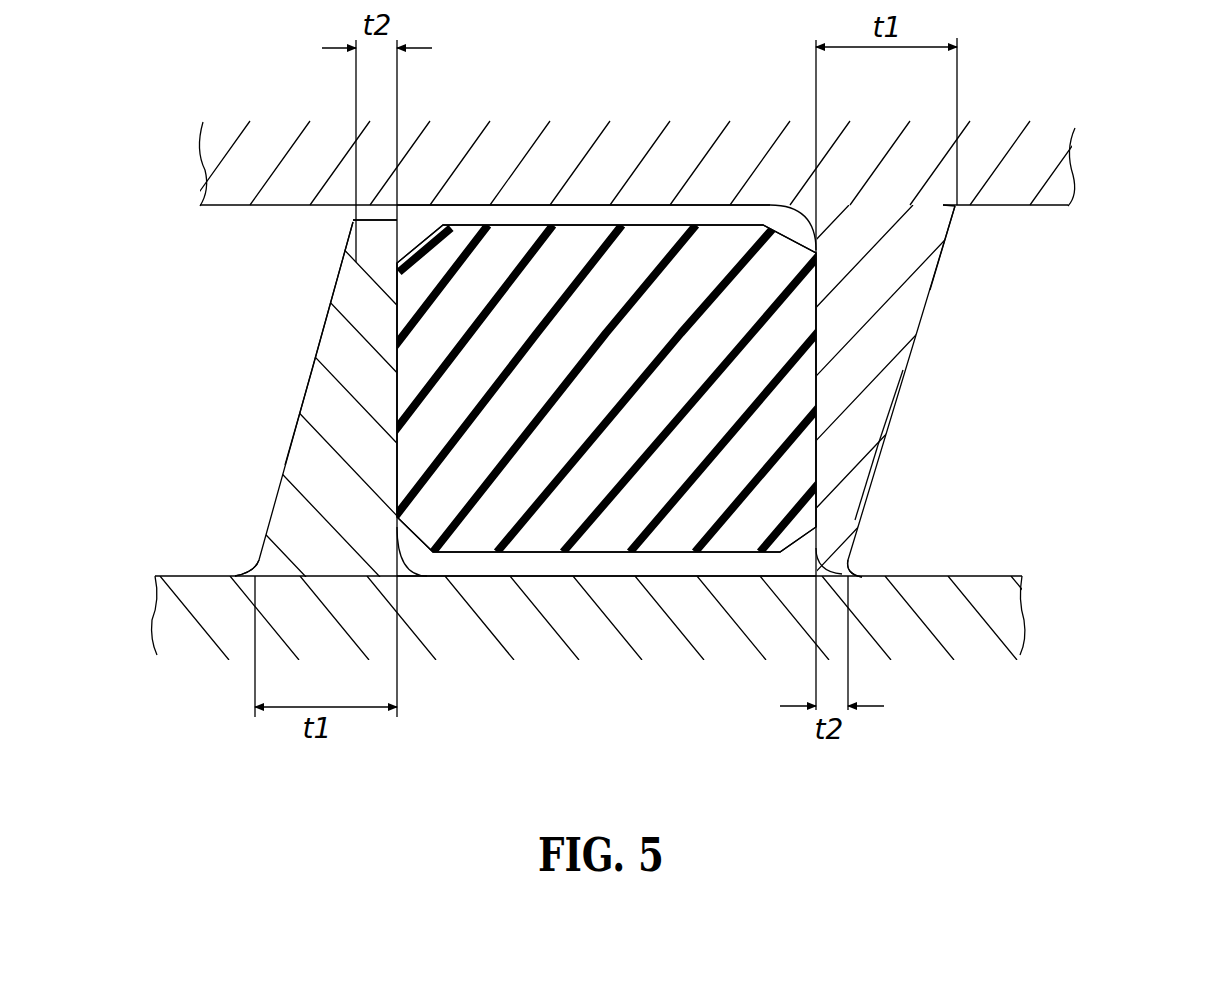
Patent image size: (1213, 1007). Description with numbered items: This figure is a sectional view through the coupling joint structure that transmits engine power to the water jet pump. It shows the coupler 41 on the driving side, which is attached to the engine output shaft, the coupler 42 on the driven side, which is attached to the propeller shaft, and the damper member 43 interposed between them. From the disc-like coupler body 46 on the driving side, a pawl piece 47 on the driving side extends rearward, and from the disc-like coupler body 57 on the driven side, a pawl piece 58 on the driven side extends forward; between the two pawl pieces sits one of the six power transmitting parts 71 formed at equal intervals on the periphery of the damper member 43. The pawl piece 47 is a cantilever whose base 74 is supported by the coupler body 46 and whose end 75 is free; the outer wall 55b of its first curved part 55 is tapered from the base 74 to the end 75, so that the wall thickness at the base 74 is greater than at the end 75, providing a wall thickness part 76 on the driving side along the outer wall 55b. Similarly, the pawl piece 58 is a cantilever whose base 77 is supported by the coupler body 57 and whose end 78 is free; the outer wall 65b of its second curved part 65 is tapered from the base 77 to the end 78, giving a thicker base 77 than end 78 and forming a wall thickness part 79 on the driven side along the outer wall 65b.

The coupler on the driving side 41 is at (1088, 130).
The coupler on the driven side 42 is at (1046, 651).
The damper member 43 is at (515, 222).
The coupler body on the driving side 46 is at (730, 158).
The pawl piece on the driving side 47 is at (893, 420).
The first curved part 55 is at (867, 370).
The outer wall of the first curved part 55b is at (874, 482).
The coupler body on the driven side 57 is at (593, 627).
The pawl piece on the driven side 58 is at (318, 360).
The second curved part 65 is at (325, 408).
The outer wall of the second curved part 65b is at (330, 310).
The power transmitting part 71 is at (623, 277).
The base of the pawl piece on the driving side 74 is at (958, 215).
The end of the pawl piece on the driving side 75 is at (857, 568).
The wall thickness part on the driving side 76 is at (908, 303).
The base of the pawl piece on the driven side 77 is at (250, 562).
The end of the pawl piece on the driven side 78 is at (365, 220).
The wall thickness part on the driven side 79 is at (305, 458).